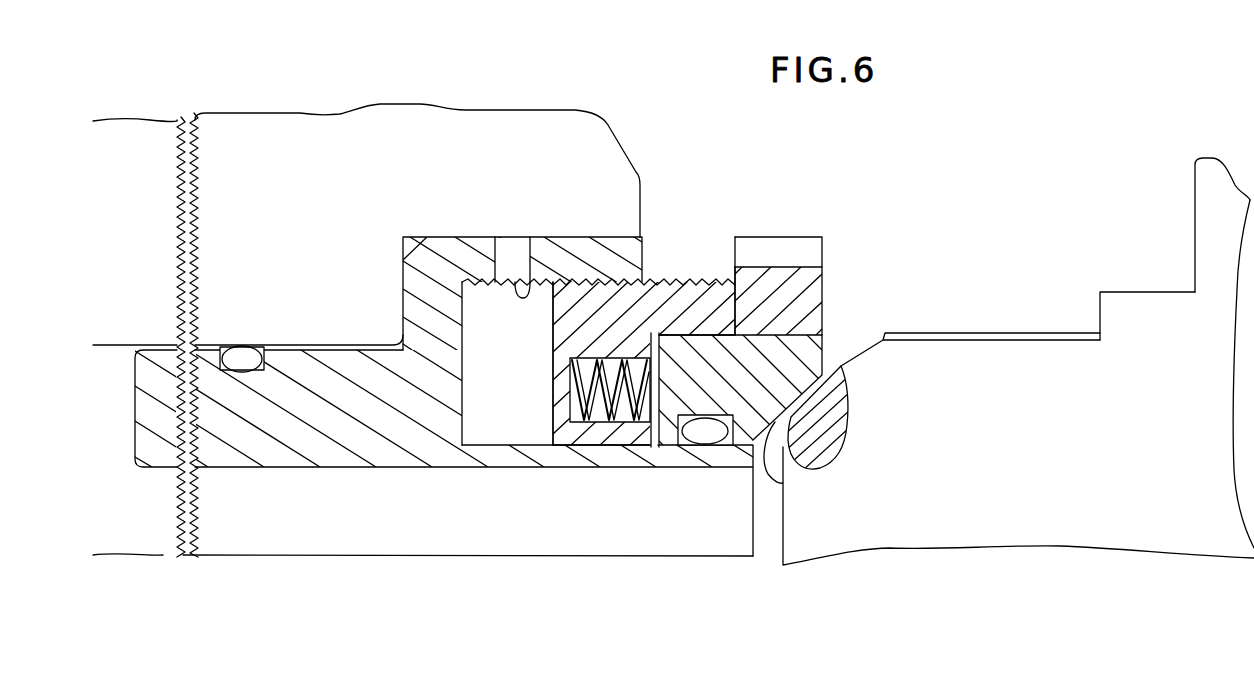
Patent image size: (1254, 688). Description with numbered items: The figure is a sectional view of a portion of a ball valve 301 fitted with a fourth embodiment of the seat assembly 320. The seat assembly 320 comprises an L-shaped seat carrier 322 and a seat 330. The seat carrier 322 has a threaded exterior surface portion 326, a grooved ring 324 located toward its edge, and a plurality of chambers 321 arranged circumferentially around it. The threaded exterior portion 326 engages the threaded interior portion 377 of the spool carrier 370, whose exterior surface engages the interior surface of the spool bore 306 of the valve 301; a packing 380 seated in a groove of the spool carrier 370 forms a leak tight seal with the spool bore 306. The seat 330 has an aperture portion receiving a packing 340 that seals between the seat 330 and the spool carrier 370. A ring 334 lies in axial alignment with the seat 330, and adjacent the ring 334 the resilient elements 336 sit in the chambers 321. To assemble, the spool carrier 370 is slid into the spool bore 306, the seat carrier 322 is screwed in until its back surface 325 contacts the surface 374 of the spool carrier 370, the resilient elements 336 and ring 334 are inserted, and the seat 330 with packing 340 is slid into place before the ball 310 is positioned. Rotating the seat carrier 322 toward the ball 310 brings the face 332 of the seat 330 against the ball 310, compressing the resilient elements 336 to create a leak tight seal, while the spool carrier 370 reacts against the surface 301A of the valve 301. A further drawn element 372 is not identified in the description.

The valve 301 is at (822, 202).
The surface of the valve 301A is at (402, 240).
The spool bore 306 is at (293, 345).
The ball 310 is at (918, 537).
The seat assembly 320 is at (697, 258).
The chambers 321 is at (480, 447).
The seat carrier 322 is at (803, 308).
The grooved ring 324 is at (810, 251).
The back surface of the seat carrier 325 is at (580, 284).
The threaded exterior surface portion 326 is at (716, 278).
The seat 330 is at (805, 353).
The face of the seat 332 is at (783, 486).
The ring 334 is at (662, 444).
The resilient elements 336 is at (598, 396).
The packing 340 is at (720, 443).
The spool carrier 370 is at (447, 250).
The retainer 372 is at (654, 447).
The surface of the spool carrier 374 is at (530, 290).
The threaded interior portion 377 is at (462, 345).
The packing 380 is at (226, 358).